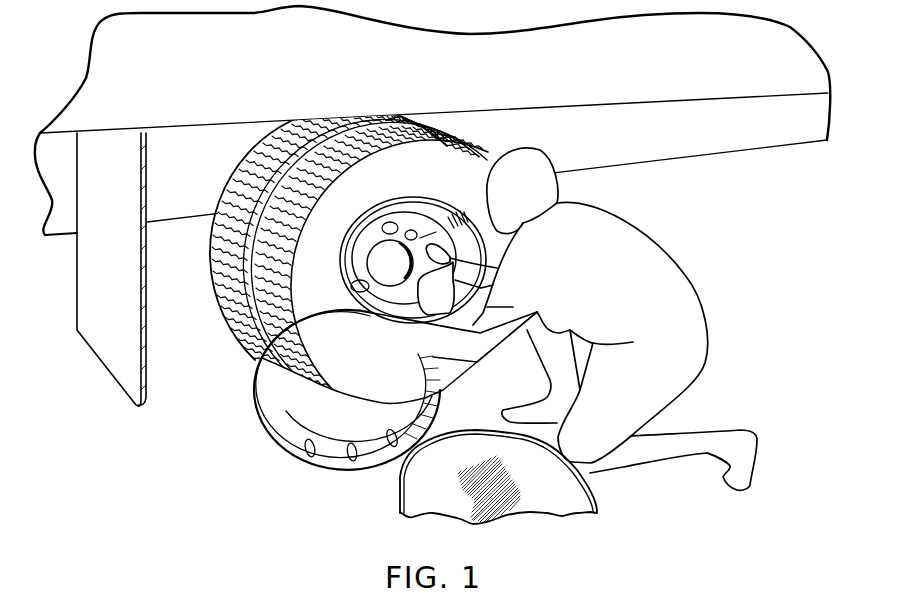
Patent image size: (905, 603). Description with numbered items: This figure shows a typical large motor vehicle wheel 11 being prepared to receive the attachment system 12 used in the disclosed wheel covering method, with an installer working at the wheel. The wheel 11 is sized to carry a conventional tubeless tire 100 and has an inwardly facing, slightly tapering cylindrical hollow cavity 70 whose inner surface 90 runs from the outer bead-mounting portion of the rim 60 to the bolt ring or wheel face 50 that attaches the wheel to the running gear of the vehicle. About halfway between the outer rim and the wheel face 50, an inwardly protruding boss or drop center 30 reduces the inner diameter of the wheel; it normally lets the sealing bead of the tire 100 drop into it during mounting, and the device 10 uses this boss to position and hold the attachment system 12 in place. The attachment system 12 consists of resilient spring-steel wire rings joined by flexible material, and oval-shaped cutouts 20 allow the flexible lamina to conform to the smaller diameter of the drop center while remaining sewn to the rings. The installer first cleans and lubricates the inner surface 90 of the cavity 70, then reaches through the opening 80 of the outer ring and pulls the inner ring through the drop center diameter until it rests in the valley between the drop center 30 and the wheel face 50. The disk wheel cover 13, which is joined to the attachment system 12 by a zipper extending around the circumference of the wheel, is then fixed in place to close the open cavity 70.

The device 10 is at (347, 510).
The motor vehicle wheel 11 is at (380, 265).
The attachment system 12 is at (293, 436).
The disk wheel cover 13 is at (519, 494).
The oval-shaped cutouts 20 is at (335, 465).
The drop center 30 is at (456, 195).
The wheel face 50 is at (430, 226).
The rim 60 is at (411, 231).
The hollow cavity 70 is at (434, 223).
The opening 80 is at (290, 390).
The inner surface 90 is at (465, 215).
The tubeless tire 100 is at (367, 185).